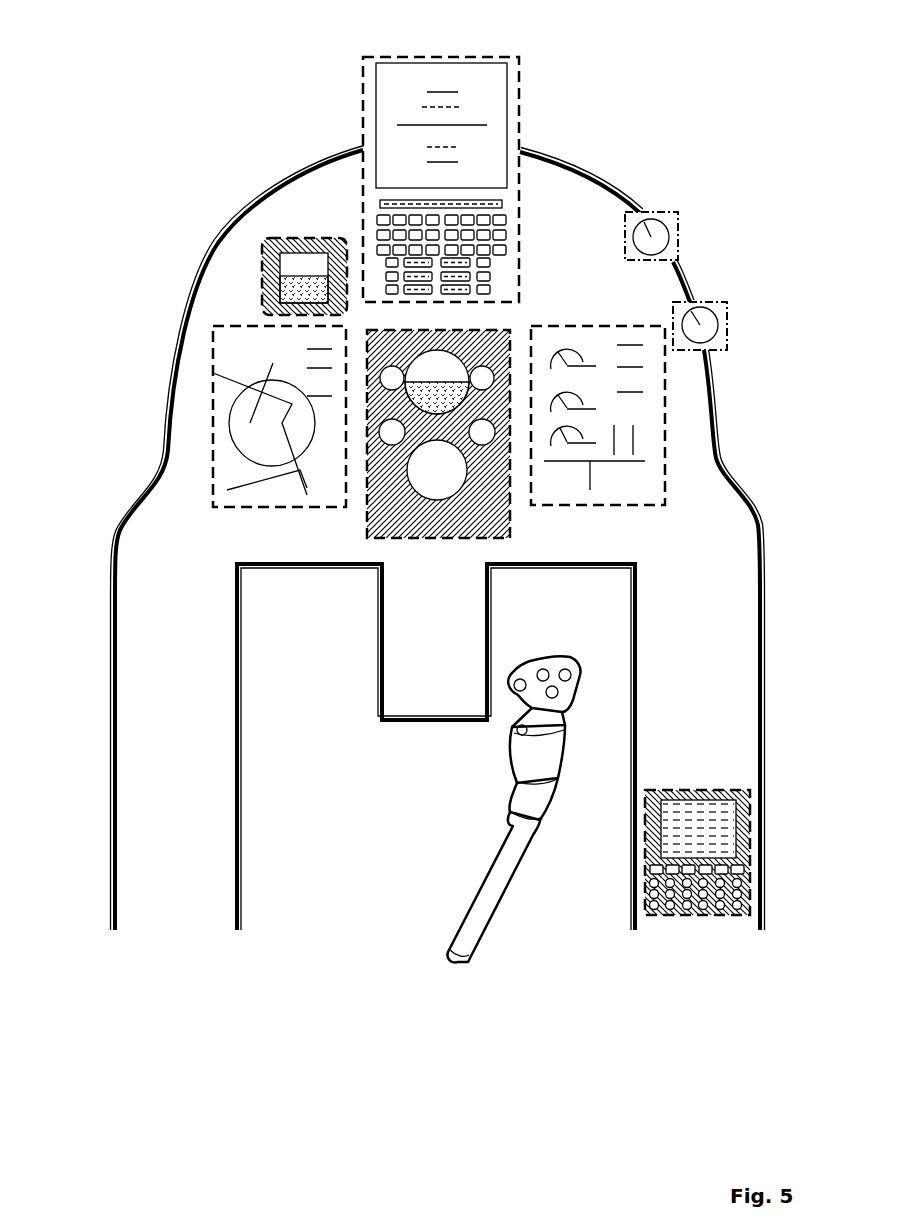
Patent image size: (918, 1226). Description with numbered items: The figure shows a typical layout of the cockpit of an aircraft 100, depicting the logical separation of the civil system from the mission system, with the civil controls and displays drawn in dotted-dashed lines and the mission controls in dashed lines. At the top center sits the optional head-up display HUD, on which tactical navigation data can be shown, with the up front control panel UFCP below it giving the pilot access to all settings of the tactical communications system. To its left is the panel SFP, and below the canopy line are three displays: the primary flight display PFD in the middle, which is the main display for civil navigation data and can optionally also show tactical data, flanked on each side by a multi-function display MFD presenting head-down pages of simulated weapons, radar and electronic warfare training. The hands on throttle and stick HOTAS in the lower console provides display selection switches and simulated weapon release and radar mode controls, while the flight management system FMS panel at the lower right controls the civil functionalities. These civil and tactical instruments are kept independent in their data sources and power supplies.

The aircraft 100 is at (187, 910).
The head-up display HUD is at (489, 86).
The up front control panel UFCP is at (509, 218).
The standby flight panel SFP is at (262, 256).
The multi-function display MFD is at (225, 478).
The primary flight display PFD is at (367, 520).
The hands on throttle and stick HOTAS is at (530, 753).
The flight management system FMS is at (720, 830).